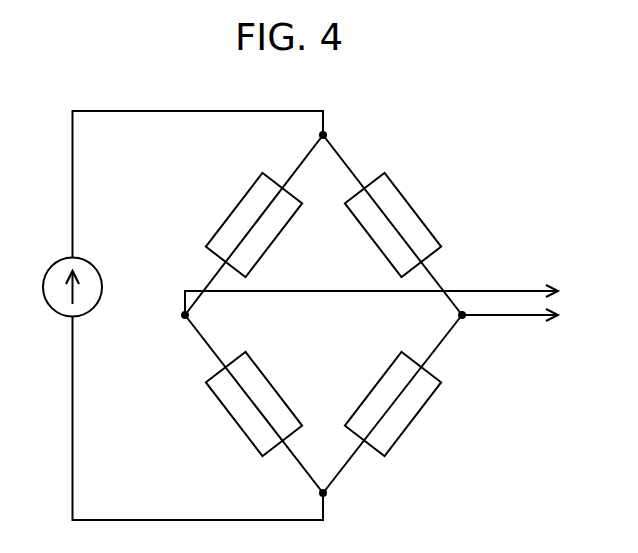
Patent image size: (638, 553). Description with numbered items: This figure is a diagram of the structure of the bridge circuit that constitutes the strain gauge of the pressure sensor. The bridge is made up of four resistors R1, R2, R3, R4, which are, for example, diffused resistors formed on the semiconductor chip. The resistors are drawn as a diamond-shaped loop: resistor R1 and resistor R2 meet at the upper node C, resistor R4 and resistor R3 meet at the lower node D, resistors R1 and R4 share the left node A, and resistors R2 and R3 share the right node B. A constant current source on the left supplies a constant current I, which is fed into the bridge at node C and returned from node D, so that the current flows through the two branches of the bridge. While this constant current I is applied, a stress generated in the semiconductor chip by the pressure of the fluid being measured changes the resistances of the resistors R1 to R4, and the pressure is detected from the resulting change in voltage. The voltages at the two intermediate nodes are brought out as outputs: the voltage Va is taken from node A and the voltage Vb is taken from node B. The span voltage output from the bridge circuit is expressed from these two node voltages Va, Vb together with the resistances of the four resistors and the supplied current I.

The current I is at (68, 281).
The resistor R1 is at (254, 225).
The resistor R2 is at (392, 225).
The resistor R3 is at (392, 404).
The resistor R4 is at (254, 404).
The node A is at (176, 316).
The node B is at (452, 316).
The bridge node C (current input) C is at (333, 135).
The bridge node D (current return) D is at (333, 503).
The voltage at node A Va is at (386, 298).
The voltage at node B Vb is at (525, 317).